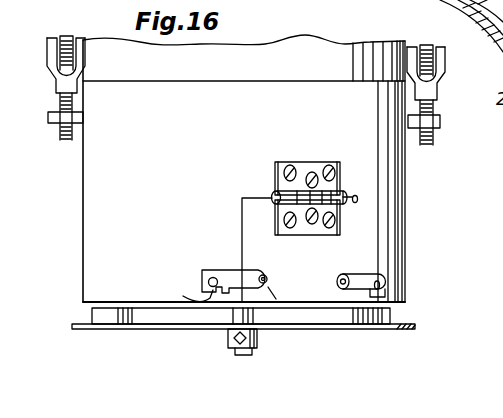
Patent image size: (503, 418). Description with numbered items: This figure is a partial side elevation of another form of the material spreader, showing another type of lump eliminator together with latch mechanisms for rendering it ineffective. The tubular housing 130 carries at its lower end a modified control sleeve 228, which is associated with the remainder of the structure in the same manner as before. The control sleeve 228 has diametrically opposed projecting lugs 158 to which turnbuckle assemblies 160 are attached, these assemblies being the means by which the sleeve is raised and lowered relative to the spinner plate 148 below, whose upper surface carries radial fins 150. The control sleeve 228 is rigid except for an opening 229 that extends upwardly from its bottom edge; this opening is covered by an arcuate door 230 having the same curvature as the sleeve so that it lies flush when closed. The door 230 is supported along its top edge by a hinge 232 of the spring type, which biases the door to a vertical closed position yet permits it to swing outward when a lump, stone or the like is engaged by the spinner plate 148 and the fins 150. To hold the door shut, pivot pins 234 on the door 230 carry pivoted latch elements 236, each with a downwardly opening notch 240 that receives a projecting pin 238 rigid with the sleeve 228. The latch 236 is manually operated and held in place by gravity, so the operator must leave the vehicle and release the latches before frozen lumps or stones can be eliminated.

The tubular housing 130 is at (353, 43).
The turnbuckle assemblies 160 is at (440, 70).
The projecting lugs 158 is at (441, 123).
The control sleeve 228 is at (85, 162).
The hinge 232 is at (338, 183).
The opening 229 is at (357, 196).
The arcuate door 230 is at (253, 209).
The latch elements 236 is at (225, 271).
The projecting pins 238 is at (211, 280).
The pivot pins 234 is at (267, 275).
The downwardly opening notch 240 is at (230, 294).
The radial fins 150 is at (388, 318).
The spinner plate 148 is at (413, 330).